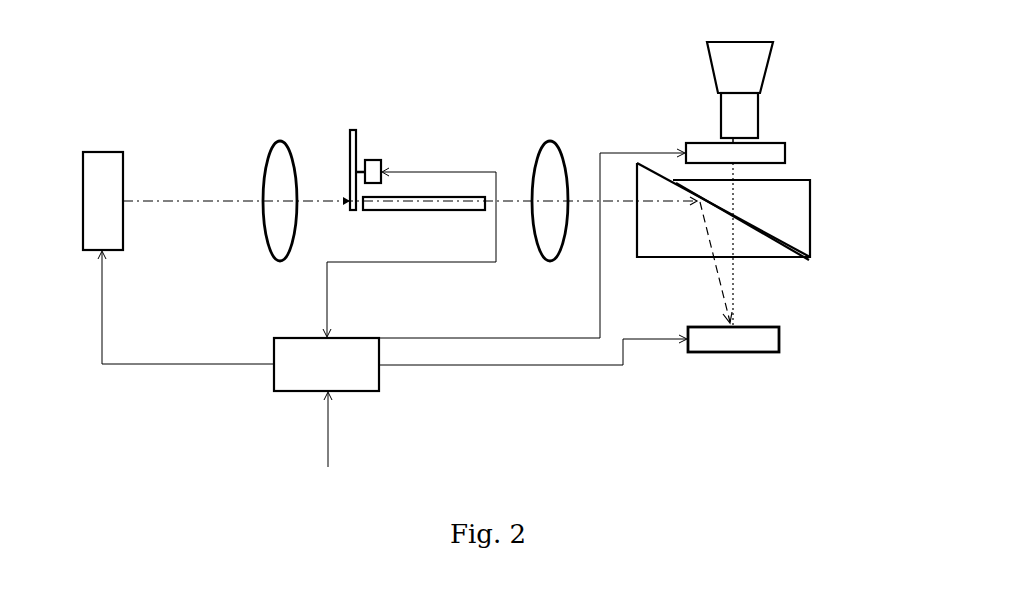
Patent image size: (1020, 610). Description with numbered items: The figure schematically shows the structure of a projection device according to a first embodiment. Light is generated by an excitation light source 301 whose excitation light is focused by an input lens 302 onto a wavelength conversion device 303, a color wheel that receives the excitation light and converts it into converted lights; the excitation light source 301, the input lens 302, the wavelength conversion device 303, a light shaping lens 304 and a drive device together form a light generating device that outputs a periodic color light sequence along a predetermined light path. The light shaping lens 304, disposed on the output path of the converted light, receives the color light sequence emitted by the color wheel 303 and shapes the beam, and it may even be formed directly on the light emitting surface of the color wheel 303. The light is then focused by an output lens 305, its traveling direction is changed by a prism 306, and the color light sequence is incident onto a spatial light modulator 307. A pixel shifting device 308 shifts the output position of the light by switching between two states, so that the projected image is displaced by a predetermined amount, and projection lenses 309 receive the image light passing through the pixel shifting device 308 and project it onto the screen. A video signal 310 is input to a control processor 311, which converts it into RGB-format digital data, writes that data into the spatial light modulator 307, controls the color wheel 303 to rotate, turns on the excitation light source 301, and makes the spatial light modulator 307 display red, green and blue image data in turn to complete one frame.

The excitation light source 301 is at (115, 181).
The input lens 302 is at (275, 185).
The wavelength conversion device 303 is at (363, 158).
The light shaping lens 304 is at (424, 223).
The output lens 305 is at (549, 183).
The prism 306 is at (761, 211).
The spatial light modulator 307 is at (733, 354).
The pixel shifting device 308 is at (767, 152).
The projection lenses 309 is at (764, 90).
The video signal 310 is at (326, 445).
The control processor 311 is at (392, 285).